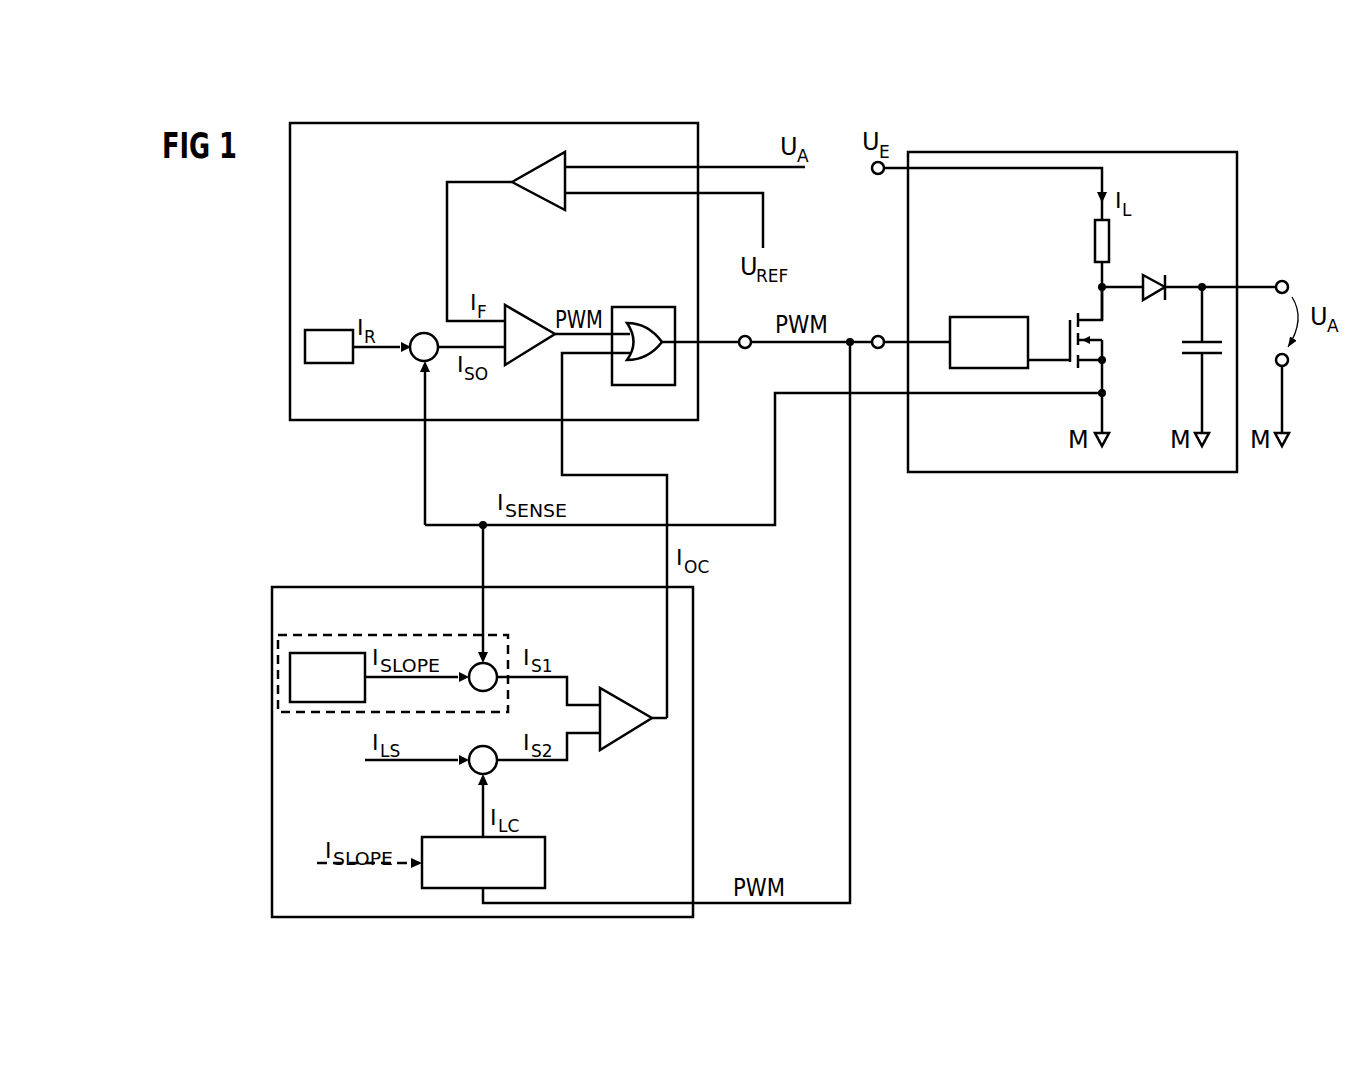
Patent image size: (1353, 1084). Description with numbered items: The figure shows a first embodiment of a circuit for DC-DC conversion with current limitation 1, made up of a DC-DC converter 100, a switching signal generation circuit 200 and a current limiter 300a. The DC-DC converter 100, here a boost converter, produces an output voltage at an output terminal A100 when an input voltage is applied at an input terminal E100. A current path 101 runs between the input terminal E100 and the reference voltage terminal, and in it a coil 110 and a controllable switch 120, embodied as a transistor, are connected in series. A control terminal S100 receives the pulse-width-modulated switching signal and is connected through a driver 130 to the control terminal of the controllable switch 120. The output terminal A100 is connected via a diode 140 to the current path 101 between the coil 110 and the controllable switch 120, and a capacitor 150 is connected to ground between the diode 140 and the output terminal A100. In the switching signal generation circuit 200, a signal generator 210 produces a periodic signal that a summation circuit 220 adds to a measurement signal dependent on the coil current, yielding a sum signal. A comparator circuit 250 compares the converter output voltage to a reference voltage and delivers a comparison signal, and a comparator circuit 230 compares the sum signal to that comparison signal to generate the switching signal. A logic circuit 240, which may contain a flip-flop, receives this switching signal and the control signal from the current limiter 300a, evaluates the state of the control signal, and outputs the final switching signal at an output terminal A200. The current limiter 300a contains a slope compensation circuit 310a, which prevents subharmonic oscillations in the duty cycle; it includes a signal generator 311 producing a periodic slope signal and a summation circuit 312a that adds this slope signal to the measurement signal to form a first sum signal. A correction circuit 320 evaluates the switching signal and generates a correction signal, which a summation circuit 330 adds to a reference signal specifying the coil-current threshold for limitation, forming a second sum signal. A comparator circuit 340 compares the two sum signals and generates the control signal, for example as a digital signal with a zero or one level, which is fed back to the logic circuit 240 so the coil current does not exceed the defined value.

The circuit for DC-DC conversion with current limitation 1 is at (236, 517).
The DC-DC converter 100 is at (1080, 474).
The current path 101 is at (1101, 305).
The coil 110 is at (1095, 241).
The controllable switch 120 is at (1090, 333).
The driver 130 is at (990, 315).
The diode 140 is at (1157, 275).
The capacitor 150 is at (1194, 356).
The input terminal E100 is at (878, 177).
The output terminal A100 is at (1283, 280).
The control terminal S100 is at (878, 335).
The switching signal generation circuit 200 is at (290, 265).
The signal generator 210 is at (331, 330).
The summation circuit 220 is at (424, 332).
The comparator circuit 230 is at (533, 306).
The logic circuit 240 is at (646, 305).
The comparator circuit 250 is at (537, 200).
The output terminal A200 is at (745, 350).
The current limiter 300a is at (272, 765).
The slope compensation circuit 310a is at (314, 713).
The signal generator 311 is at (328, 652).
The summation circuit 312a is at (472, 663).
The correction circuit 320 is at (545, 862).
The summation circuit 330 is at (469, 773).
The comparator circuit 340 is at (620, 690).